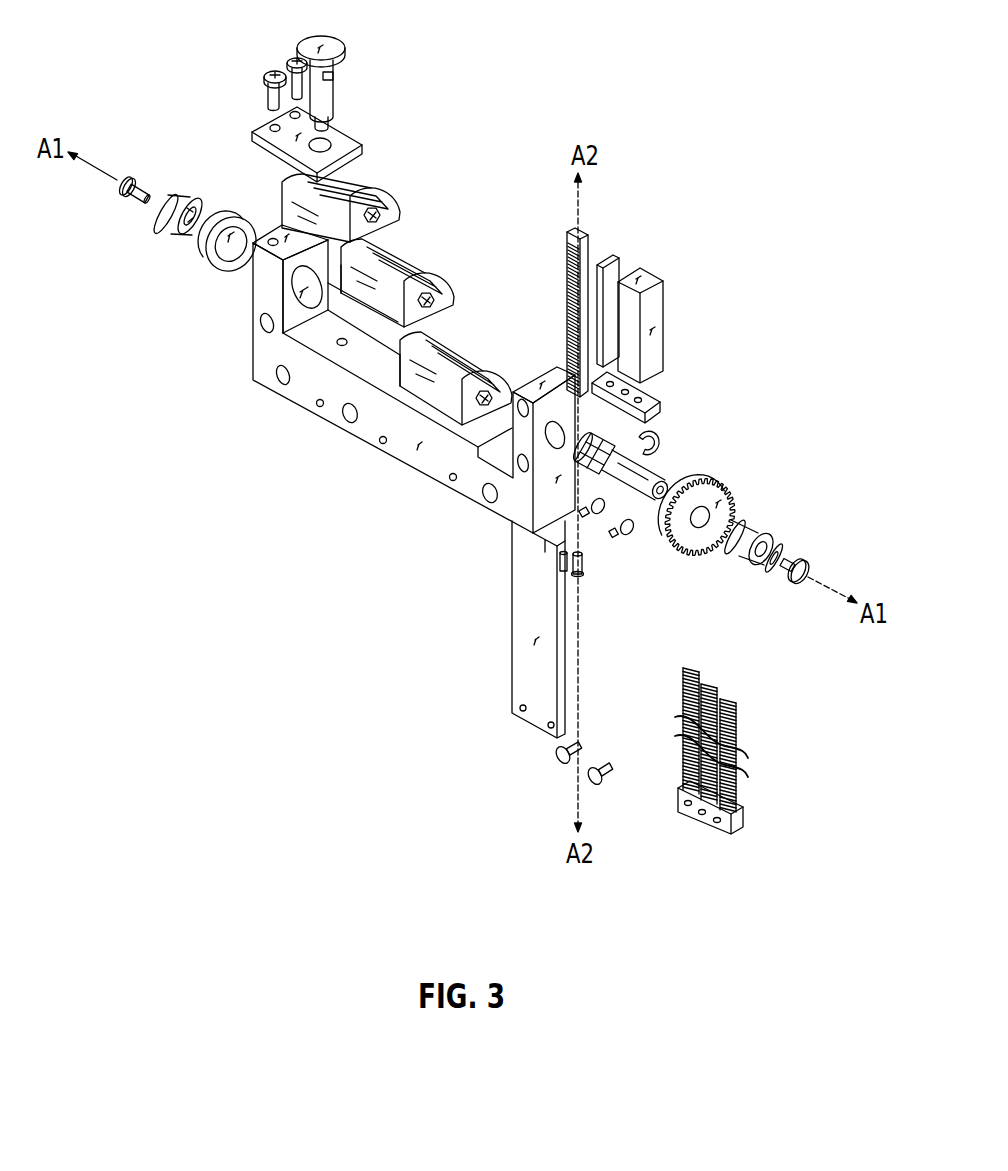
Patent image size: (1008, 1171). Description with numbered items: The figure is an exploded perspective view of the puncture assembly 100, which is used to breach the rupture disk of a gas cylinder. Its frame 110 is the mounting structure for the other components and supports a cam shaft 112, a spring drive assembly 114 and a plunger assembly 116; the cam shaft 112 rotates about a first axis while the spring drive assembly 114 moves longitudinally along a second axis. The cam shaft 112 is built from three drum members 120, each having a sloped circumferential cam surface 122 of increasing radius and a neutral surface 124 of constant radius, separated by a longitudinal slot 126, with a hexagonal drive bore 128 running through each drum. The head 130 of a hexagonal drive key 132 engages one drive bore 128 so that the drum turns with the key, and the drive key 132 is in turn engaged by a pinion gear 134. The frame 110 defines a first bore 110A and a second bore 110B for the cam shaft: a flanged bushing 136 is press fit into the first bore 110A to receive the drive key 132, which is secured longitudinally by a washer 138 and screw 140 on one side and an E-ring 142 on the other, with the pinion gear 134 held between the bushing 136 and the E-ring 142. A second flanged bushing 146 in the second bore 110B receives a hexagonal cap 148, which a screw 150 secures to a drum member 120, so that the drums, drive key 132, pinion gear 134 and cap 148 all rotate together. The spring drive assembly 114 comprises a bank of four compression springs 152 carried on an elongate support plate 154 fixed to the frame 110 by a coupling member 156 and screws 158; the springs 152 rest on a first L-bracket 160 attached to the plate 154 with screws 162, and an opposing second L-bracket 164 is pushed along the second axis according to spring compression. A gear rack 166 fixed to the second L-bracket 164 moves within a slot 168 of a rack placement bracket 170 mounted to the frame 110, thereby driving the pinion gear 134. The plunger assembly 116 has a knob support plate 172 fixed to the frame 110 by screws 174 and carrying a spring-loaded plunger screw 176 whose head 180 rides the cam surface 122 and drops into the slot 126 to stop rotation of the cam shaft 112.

The puncture assembly 100 is at (636, 88).
The frame 110 is at (266, 379).
The first bore 110A is at (514, 522).
The second bore 110B is at (283, 335).
The cam shaft 112 is at (435, 231).
The spring drive assembly 114 is at (694, 340).
The plunger assembly 116 is at (356, 23).
The drum member 120 is at (292, 193).
The cam surface 122 is at (421, 257).
The neutral surface 124 is at (370, 300).
The longitudinal slot 126 is at (360, 178).
The hexagonal drive bore 128 is at (458, 300).
The head 130 is at (586, 446).
The hexagonal drive key 132 is at (660, 490).
The pinion gear 134 is at (724, 490).
The flanged bushing 136 is at (760, 522).
The washer 138 is at (780, 545).
The screw 140 is at (806, 564).
The E-ring 142 is at (660, 440).
The flanged bushing 146 is at (213, 267).
The hexagonal cap 148 is at (178, 237).
The screw 150 is at (130, 200).
The compression springs 152 is at (724, 667).
The elongate support plate 154 is at (512, 680).
The coupling member 156 is at (543, 538).
The screws 158 is at (620, 538).
The first L-bracket 160 is at (738, 833).
The screws 162 is at (610, 763).
The second L-bracket 164 is at (656, 408).
The gear rack 166 is at (588, 244).
The slot 168 is at (620, 270).
The rack placement bracket 170 is at (661, 285).
The knob support plate 172 is at (354, 134).
The screws 174 is at (268, 72).
The spring-loaded plunger screw 176 is at (338, 78).
The head 180 is at (329, 122).